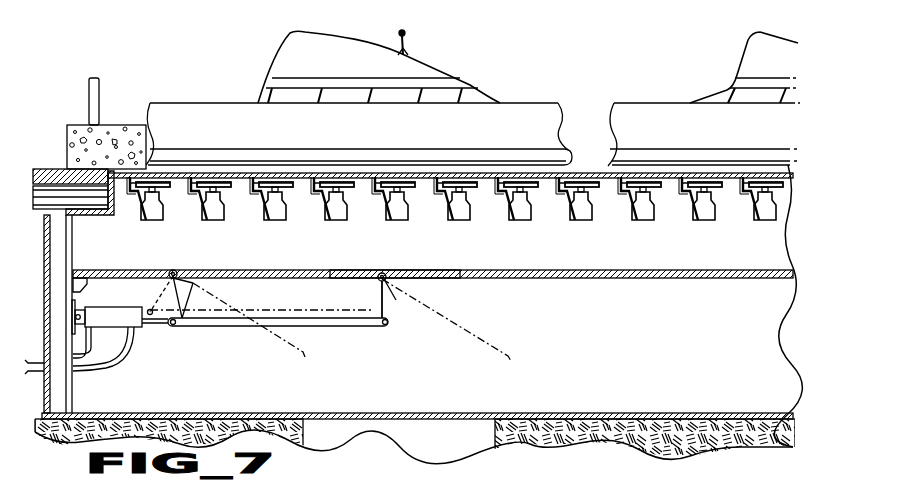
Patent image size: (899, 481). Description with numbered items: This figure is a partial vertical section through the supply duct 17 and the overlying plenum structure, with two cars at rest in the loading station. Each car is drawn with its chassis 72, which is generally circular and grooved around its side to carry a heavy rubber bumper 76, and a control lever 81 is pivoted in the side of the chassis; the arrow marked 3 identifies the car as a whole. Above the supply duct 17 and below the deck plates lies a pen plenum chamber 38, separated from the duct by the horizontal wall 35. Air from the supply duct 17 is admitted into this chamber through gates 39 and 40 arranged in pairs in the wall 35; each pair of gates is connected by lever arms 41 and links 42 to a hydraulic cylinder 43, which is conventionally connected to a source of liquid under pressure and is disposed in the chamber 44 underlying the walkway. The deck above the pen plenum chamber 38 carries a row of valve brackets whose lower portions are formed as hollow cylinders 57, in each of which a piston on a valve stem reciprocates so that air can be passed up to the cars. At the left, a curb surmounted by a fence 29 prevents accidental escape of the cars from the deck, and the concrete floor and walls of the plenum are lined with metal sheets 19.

The boat 3 is at (256, 84).
The control lever 81 is at (408, 43).
The chassis 72 is at (530, 103).
The rubber bumper 76 is at (507, 154).
The fence 29 is at (100, 92).
The chamber 44 is at (33, 267).
The hollow cylinder 57 is at (268, 214).
The pen plenum chamber 38 is at (480, 244).
The horizontal wall 35 is at (652, 282).
The gate 40 is at (500, 281).
The gate 39 is at (249, 282).
The link 42 is at (333, 327).
The lever arm 41 is at (396, 305).
The hydraulic cylinder 43 is at (110, 316).
The supply duct 17 is at (471, 377).
The metal sheets 19 is at (703, 417).